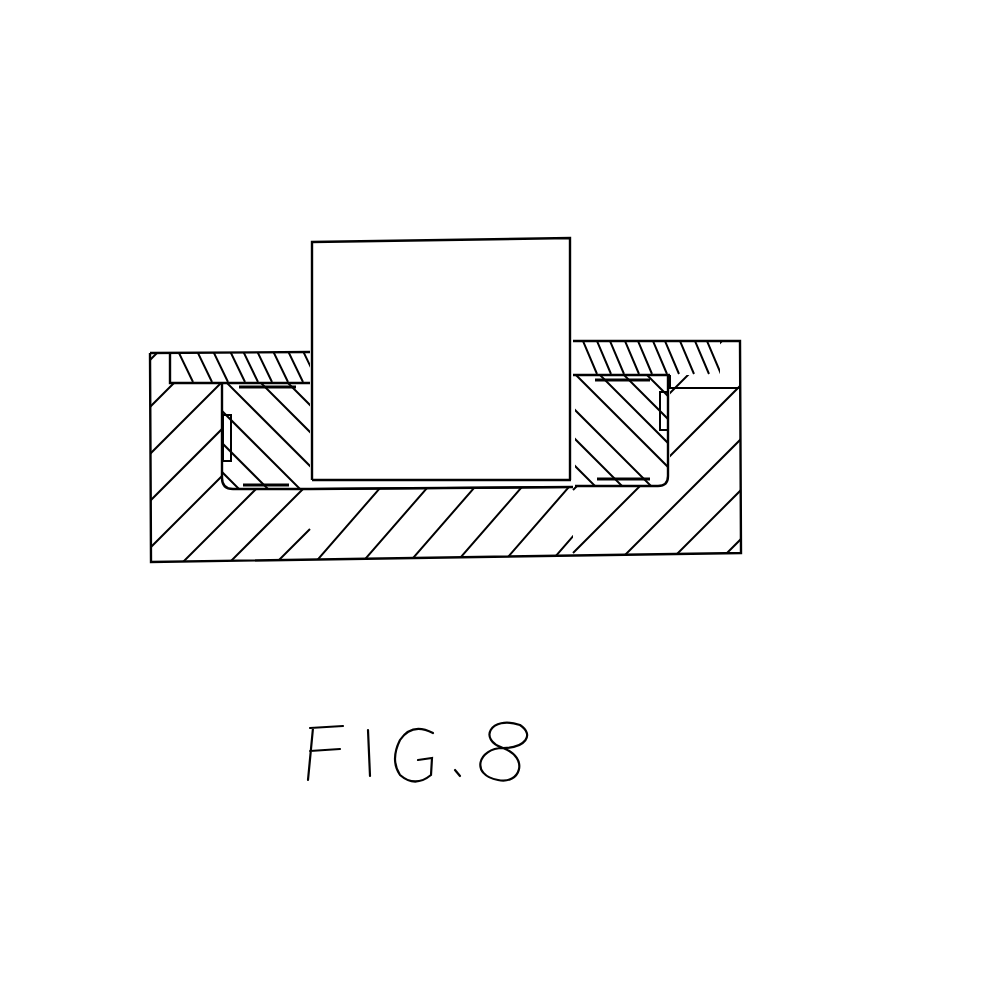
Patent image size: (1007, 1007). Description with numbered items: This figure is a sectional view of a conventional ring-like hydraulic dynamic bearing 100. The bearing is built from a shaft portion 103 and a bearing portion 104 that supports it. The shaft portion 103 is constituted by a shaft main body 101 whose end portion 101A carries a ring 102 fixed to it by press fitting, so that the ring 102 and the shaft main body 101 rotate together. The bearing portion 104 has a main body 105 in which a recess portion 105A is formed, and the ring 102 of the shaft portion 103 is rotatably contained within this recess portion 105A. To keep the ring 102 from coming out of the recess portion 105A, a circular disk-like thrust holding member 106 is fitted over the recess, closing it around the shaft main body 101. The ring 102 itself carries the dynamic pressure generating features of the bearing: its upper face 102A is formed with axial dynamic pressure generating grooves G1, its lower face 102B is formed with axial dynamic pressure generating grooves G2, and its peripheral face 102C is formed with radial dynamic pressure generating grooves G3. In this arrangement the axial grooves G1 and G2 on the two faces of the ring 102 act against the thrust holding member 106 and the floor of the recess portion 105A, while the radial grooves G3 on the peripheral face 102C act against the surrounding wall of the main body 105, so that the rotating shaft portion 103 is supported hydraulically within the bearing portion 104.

The ring-like hydraulic dynamic bearing 100 is at (453, 381).
The shaft main body 101 is at (403, 270).
The end portion of shaft main body 101A is at (467, 450).
The ring 102 is at (463, 447).
The upper face of ring 102A is at (602, 346).
The lower face of ring 102B is at (596, 488).
The peripheral face of ring 102C is at (740, 383).
The shaft portion 103 is at (572, 257).
The bearing portion 104 is at (386, 468).
The main body of bearing portion 105 is at (172, 527).
The recess portion 105A is at (397, 490).
The thrust holding member 106 is at (202, 375).
The axial dynamic pressure generating grooves G1 is at (266, 382).
The axial dynamic pressure generating grooves G2 is at (258, 490).
The radial dynamic pressure generating grooves G3 is at (222, 440).